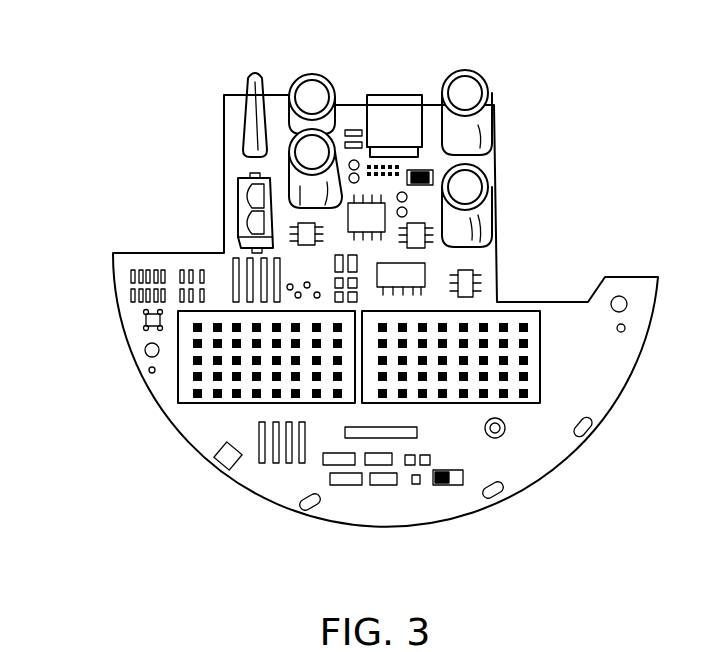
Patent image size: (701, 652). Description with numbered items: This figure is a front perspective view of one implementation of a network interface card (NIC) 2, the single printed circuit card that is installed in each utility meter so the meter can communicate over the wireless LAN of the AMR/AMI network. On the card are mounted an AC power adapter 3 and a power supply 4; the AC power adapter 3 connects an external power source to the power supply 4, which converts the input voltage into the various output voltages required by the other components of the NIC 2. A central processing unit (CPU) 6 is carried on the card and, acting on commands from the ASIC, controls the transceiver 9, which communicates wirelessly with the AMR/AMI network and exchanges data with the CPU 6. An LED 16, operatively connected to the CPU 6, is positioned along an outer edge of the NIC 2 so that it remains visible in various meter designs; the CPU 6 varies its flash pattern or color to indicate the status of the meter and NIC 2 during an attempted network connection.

The network interface card 2 is at (100, 283).
The AC power adapter 3 is at (243, 185).
The power supply 4 is at (395, 103).
The central processing unit 6 is at (213, 392).
The transceiver 9 is at (463, 373).
The LED 16 is at (227, 460).